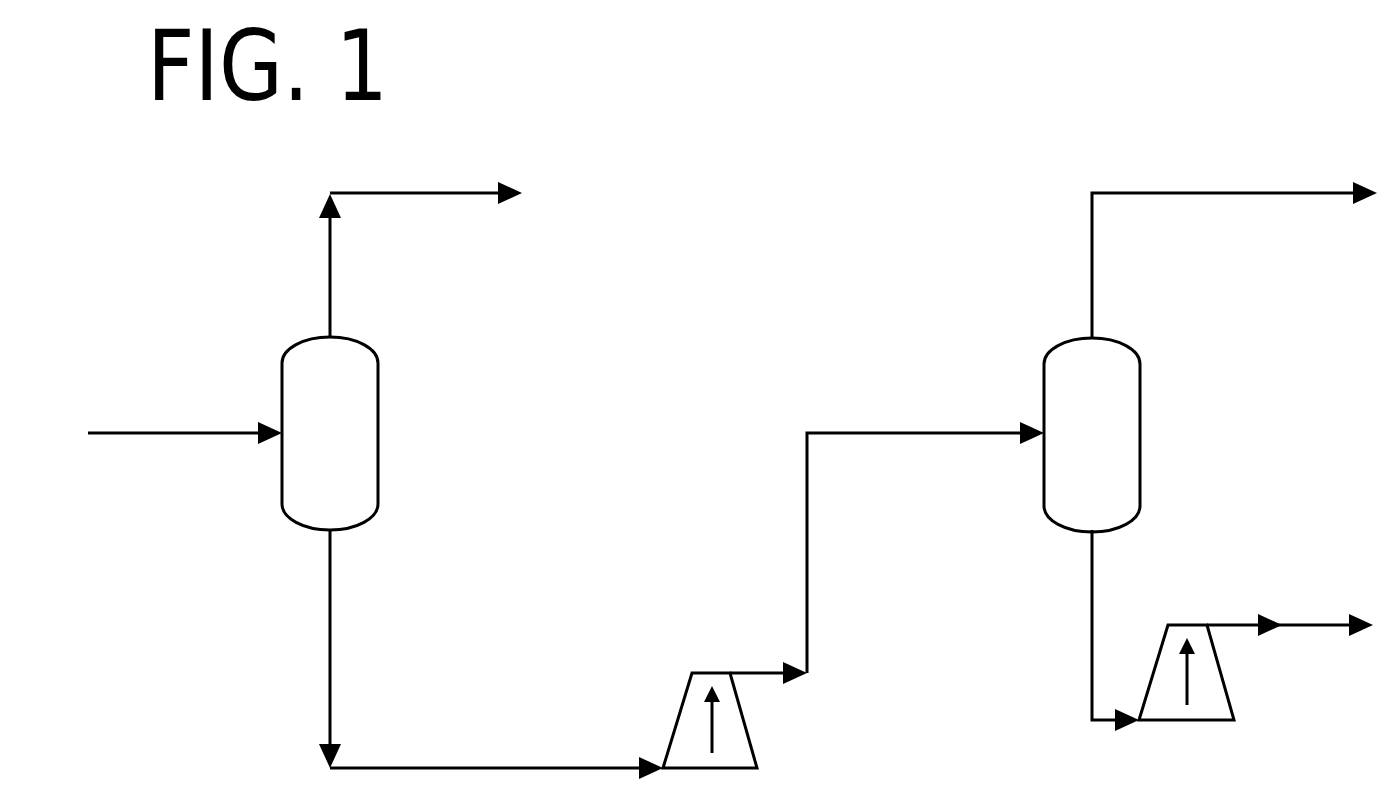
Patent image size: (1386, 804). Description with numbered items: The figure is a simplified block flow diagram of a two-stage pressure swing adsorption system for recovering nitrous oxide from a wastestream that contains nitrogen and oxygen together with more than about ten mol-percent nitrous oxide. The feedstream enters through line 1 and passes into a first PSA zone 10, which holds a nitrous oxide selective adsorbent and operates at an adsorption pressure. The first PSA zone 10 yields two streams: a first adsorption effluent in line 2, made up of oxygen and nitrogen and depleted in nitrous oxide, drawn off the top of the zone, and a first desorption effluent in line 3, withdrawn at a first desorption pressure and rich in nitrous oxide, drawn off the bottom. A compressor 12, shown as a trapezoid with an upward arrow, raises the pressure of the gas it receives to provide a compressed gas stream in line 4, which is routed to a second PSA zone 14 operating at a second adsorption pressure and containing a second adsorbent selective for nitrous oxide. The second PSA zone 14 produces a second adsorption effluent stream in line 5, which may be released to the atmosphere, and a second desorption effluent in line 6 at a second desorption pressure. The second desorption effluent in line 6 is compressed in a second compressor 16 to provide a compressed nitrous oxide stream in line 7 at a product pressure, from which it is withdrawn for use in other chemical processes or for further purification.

The line 1 is at (185, 433).
The line 2 is at (425, 193).
The line 3 is at (331, 645).
The line 4 is at (807, 548).
The line 5 is at (1190, 193).
The line 6 is at (1093, 585).
The line 7 is at (1330, 625).
The first PSA zone 10 is at (378, 433).
The compressor 12 is at (748, 727).
The second separator vessel 14 is at (1142, 400).
The second compressor 16 is at (1218, 665).